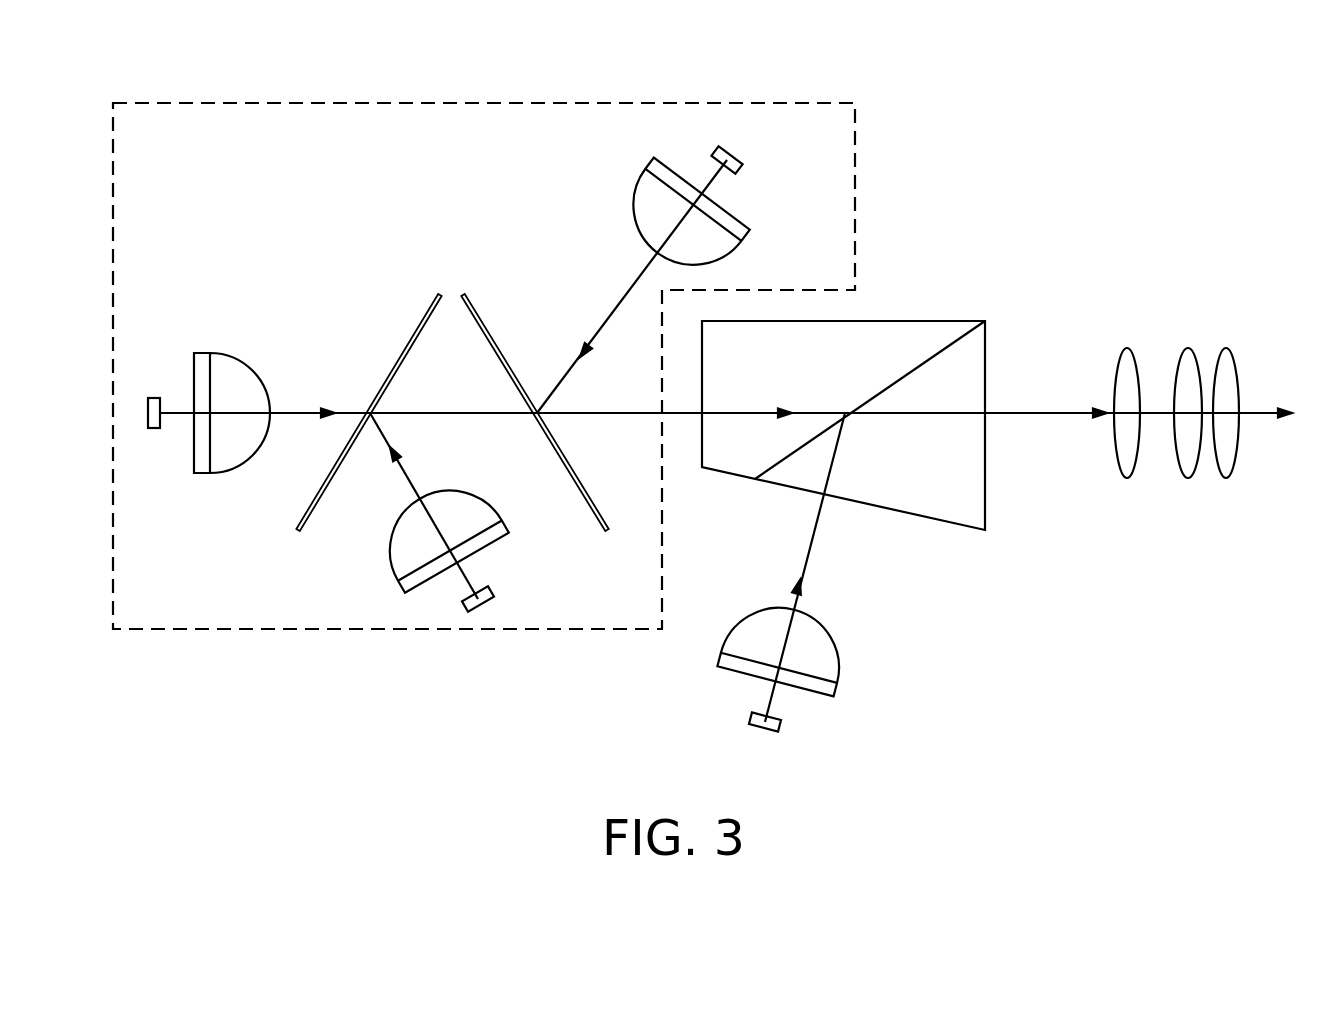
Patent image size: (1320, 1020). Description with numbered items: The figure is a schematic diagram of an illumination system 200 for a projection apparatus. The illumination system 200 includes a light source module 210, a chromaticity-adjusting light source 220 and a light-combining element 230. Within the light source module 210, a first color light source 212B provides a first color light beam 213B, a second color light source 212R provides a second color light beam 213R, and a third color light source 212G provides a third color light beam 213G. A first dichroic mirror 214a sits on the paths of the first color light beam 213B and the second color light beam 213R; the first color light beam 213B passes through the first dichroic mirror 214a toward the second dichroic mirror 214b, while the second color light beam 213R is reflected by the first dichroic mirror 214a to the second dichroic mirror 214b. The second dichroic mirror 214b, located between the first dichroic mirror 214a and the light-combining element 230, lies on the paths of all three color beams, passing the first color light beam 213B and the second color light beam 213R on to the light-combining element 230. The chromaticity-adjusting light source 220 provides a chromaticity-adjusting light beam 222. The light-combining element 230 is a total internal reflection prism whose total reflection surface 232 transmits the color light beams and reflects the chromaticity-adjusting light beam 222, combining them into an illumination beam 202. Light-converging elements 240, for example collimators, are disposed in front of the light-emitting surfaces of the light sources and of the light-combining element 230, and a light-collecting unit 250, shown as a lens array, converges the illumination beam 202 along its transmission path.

The illumination system 200 is at (1258, 728).
The light source module 210 is at (858, 176).
The illumination beam 202 is at (1043, 412).
The first color light source 212B is at (154, 432).
The third color light source 212G is at (733, 152).
The second color light source 212R is at (493, 588).
The first color light beam 213B is at (313, 412).
The third color light beam 213G is at (636, 281).
The second color light beam 213R is at (400, 458).
The first dichroic mirror 214a is at (422, 324).
The second dichroic mirror 214b is at (478, 320).
The chromaticity-adjusting light source 220 is at (780, 721).
The chromaticity-adjusting light beam 222 is at (811, 545).
The light-combining element 230 is at (897, 337).
The total reflection surface 232 is at (937, 352).
The light-converging element 240 is at (243, 350).
The light-collecting unit 250 is at (1178, 322).